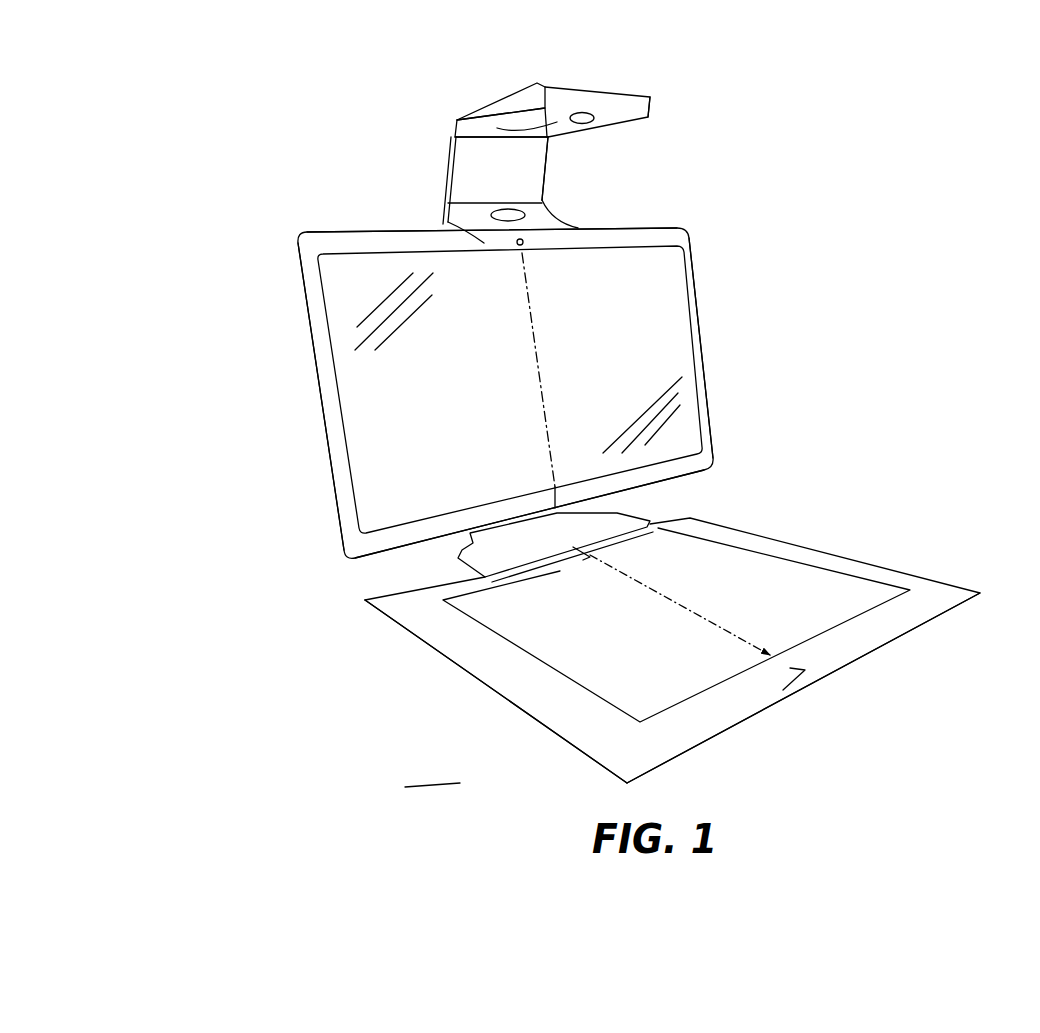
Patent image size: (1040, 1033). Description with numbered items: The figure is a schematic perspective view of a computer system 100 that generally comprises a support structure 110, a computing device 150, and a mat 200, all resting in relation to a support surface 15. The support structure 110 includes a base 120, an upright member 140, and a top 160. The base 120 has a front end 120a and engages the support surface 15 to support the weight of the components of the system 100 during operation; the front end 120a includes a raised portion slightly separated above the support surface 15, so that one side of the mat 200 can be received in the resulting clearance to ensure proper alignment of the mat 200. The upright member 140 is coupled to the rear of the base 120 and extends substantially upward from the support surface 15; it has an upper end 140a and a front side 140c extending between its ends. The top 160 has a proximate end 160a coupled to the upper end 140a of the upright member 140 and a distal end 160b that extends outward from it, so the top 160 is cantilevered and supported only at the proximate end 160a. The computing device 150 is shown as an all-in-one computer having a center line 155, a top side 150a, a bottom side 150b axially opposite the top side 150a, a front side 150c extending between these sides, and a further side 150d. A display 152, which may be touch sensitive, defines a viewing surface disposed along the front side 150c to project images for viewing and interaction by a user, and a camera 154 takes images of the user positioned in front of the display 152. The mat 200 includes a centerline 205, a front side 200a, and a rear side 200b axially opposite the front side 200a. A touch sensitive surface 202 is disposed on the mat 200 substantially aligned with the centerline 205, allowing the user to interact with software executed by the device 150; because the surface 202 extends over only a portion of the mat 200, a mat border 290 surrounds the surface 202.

The support surface 15 is at (460, 783).
The computer system 100 is at (837, 163).
The support structure 110 is at (294, 197).
The base 120 is at (457, 558).
The front end 120a is at (549, 566).
The upright member 140 is at (445, 187).
The upper end 140a is at (453, 121).
The front side 140c is at (540, 153).
The computing device 150 is at (702, 317).
The top side 150a is at (650, 228).
The bottom side 150b is at (677, 477).
The front side 150c is at (680, 389).
The housing left edge 150d is at (300, 351).
The display 152 is at (663, 272).
The camera 154 is at (518, 241).
The center line 155 is at (535, 364).
The top 160 is at (557, 71).
The proximate end 160a is at (501, 114).
The distal end 160b is at (652, 96).
The mat 200 is at (913, 577).
The front side 200a is at (697, 748).
The rear side 200b is at (363, 600).
The touch sensitive surface 202 is at (807, 611).
The centerline 205 is at (672, 600).
The mat border 290 is at (790, 695).